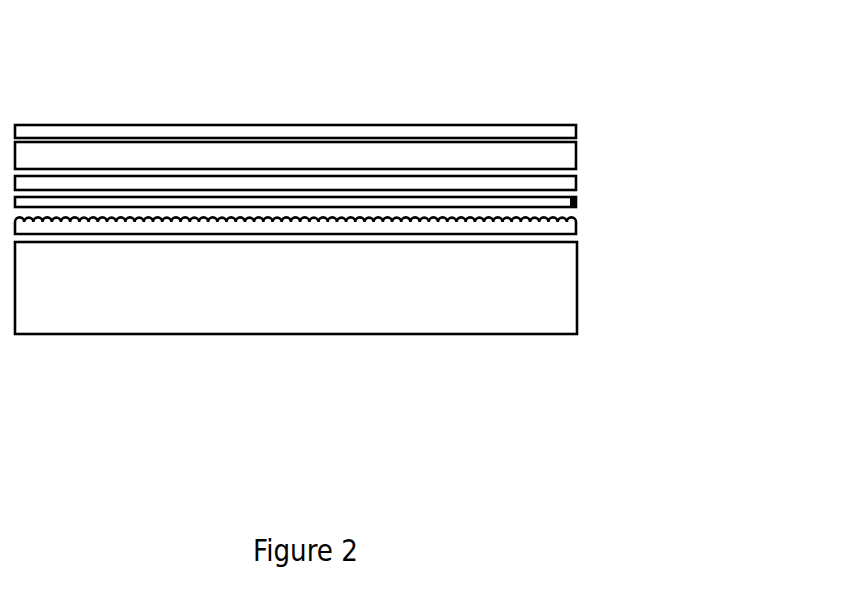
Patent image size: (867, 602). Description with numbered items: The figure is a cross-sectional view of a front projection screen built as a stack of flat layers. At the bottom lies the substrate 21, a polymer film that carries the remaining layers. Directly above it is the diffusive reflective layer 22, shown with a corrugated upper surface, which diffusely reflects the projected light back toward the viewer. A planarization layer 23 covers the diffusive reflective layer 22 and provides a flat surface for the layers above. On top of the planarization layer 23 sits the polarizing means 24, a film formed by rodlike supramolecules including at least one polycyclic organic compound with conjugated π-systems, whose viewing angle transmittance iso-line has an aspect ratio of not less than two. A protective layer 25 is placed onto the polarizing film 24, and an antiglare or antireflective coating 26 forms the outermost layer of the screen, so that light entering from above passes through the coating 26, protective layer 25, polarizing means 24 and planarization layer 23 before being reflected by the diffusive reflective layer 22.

The substrate 21 is at (549, 288).
The diffusive reflective layer 22 is at (568, 226).
The planarization layer 23 is at (577, 202).
The polarizing means 24 is at (568, 183).
The protective layer 25 is at (562, 155).
The antiglare coating 26 is at (568, 131).